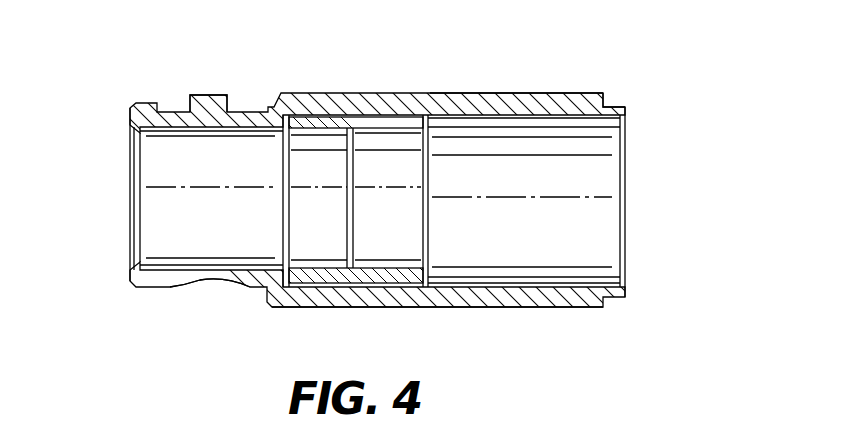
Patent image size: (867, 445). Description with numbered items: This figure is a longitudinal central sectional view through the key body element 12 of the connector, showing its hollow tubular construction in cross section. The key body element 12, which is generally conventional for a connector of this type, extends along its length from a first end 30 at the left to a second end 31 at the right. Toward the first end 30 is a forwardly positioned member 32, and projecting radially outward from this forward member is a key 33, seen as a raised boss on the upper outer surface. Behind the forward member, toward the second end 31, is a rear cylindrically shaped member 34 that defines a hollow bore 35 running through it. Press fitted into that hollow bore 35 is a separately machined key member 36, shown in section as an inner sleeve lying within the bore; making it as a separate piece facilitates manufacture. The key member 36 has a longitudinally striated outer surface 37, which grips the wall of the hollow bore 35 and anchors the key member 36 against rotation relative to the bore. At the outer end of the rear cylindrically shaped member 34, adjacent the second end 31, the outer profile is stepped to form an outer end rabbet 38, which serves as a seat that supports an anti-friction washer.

The key body element 12 is at (453, 85).
The first end 30 is at (131, 284).
The second end 31 is at (627, 270).
The forwardly positioned member 32 is at (218, 288).
The radially projecting key 33 is at (207, 93).
The rear cylindrically shaped member 34 is at (578, 80).
The hollow bore 35 is at (613, 131).
The key member 36 is at (405, 272).
The longitudinally striated outer surface 37 is at (351, 308).
The outer end rabbet 38 is at (608, 106).